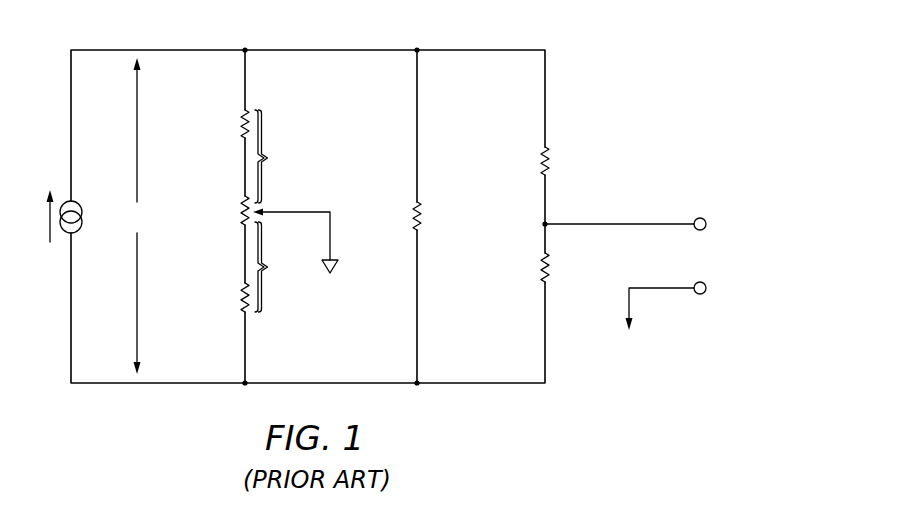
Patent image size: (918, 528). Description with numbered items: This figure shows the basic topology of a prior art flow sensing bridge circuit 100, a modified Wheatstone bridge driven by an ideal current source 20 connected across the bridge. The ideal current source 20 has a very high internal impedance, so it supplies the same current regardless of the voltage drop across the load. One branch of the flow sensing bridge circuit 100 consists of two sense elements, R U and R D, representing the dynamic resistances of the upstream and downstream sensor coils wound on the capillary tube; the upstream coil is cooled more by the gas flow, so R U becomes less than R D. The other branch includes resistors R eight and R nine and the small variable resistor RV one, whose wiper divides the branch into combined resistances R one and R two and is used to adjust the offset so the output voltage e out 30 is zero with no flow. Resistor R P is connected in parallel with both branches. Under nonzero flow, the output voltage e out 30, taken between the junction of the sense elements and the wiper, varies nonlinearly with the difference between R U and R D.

The flow sensing bridge circuit 100 is at (610, 57).
The ideal current source 20 is at (65, 234).
The output voltage e_out 30 is at (750, 236).